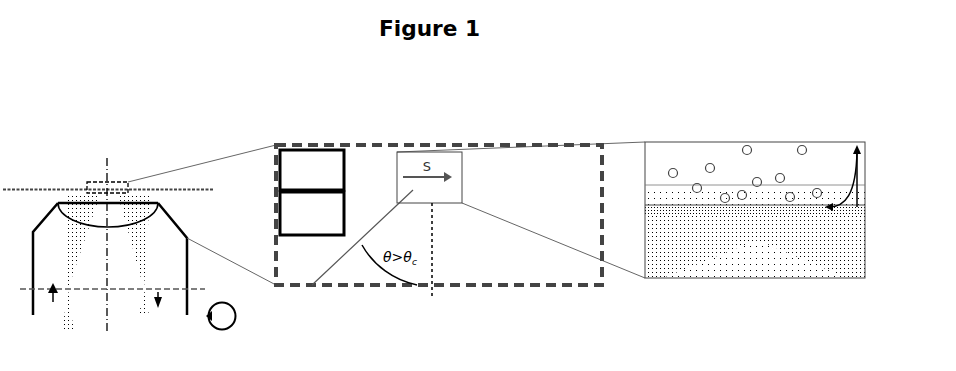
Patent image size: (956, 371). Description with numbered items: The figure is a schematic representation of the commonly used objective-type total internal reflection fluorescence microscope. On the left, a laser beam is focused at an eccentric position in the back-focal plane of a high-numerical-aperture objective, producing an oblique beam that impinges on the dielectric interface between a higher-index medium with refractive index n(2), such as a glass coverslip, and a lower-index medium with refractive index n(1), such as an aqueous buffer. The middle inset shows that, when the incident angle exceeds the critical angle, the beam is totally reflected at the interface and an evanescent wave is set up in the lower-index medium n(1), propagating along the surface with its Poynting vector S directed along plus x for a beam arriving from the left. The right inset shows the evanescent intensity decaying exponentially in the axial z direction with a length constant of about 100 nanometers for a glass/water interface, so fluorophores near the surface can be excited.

The first medium with refractive index n 1 is at (312, 170).
The second medium with refractive index n 2 is at (312, 213).
The evanescent field penetration depth of about 100 nm 100 is at (755, 210).